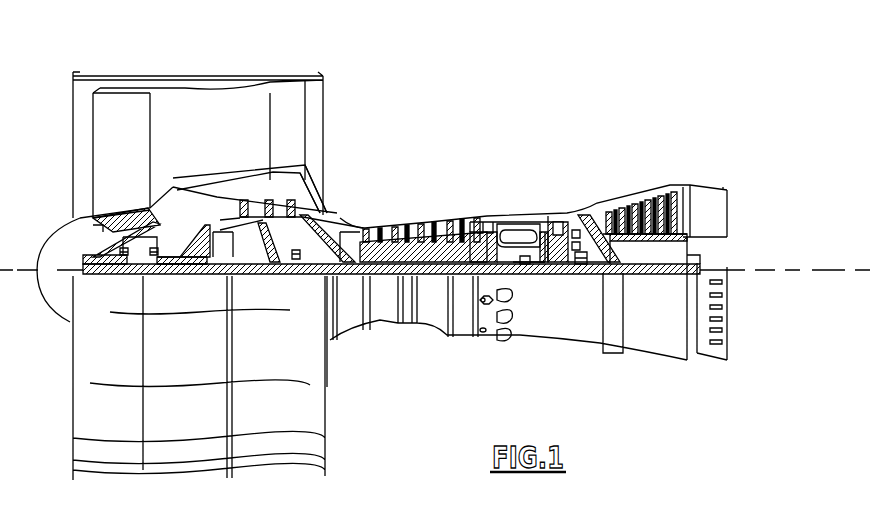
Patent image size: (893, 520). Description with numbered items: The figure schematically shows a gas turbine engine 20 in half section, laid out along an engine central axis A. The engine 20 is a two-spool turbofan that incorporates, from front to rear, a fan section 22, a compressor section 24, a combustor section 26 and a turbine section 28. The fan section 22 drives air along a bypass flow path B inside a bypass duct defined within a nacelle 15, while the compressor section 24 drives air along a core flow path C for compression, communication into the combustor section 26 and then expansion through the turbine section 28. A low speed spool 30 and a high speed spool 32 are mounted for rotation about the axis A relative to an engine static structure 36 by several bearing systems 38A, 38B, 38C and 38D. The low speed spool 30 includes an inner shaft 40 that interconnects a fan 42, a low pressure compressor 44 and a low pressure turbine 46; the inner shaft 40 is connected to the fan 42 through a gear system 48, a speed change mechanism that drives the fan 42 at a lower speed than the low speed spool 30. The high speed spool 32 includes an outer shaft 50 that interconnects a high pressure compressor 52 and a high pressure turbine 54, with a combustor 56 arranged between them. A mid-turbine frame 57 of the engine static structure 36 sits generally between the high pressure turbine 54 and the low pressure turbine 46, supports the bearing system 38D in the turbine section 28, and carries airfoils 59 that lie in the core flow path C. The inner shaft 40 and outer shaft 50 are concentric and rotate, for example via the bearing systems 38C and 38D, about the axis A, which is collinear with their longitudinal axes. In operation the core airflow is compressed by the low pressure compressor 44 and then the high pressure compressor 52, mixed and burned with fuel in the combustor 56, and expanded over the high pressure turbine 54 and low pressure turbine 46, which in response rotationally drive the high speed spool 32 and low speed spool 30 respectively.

The gas turbine engine 20 is at (522, 108).
The nacelle 15 is at (200, 76).
The fan section 22 is at (148, 68).
The fan 42 is at (110, 165).
The low pressure compressor 44 is at (277, 203).
The compressor section 24 is at (360, 198).
The high pressure compressor 52 is at (413, 223).
The high speed spool 32 is at (465, 230).
The combustor section 26 is at (513, 195).
The combustor 56 is at (513, 230).
The high pressure turbine 54 is at (560, 230).
The mid-turbine frame 57 is at (592, 205).
The turbine section 28 is at (618, 172).
The low pressure turbine 46 is at (648, 195).
The airfoils 59 is at (614, 253).
The outer shaft 50 is at (522, 274).
The bearing system 38D is at (580, 275).
The engine static structure 36 is at (463, 340).
The low speed spool 30 is at (433, 283).
The inner shaft 40 is at (342, 276).
The bearing system 38A is at (128, 275).
The bearing system 38B is at (155, 257).
The bearing system 38C is at (298, 275).
The gear system 48 is at (205, 262).
The engine central axis A is at (792, 270).
The bypass flow path B is at (170, 125).
The core flow path C is at (195, 200).